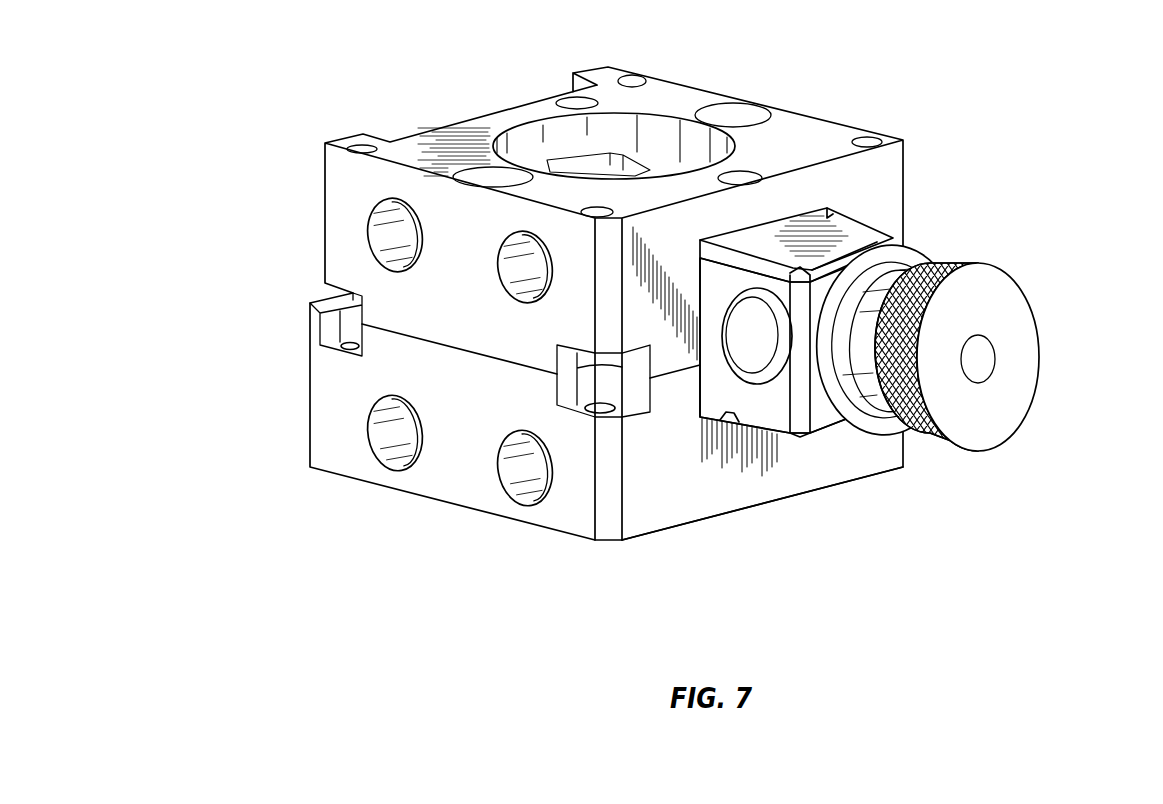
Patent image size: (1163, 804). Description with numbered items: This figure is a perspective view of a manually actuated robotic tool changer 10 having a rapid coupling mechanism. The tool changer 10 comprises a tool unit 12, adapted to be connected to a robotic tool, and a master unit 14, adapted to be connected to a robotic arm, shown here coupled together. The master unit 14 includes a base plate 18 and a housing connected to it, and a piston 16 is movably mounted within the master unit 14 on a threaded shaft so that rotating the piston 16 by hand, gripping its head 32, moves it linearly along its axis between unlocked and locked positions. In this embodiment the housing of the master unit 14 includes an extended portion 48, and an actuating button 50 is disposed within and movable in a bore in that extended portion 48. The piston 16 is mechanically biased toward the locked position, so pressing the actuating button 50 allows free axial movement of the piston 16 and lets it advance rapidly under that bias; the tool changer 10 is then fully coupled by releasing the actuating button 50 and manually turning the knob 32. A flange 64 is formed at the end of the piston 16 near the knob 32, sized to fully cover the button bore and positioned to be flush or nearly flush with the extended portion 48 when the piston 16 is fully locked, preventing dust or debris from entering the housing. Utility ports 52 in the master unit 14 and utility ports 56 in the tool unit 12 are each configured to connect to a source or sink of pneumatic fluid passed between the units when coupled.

The manually actuated robotic tool changer 10 is at (670, 323).
The tool unit 12 is at (620, 303).
The master unit 14 is at (560, 457).
The piston 16 is at (864, 391).
The base plate 18 is at (667, 507).
The head 32 is at (1010, 392).
The extended portion 48 is at (815, 235).
The actuating button 50 is at (757, 348).
The utility ports 52 is at (530, 474).
The utility ports 56 is at (530, 277).
The flange 64 is at (860, 378).